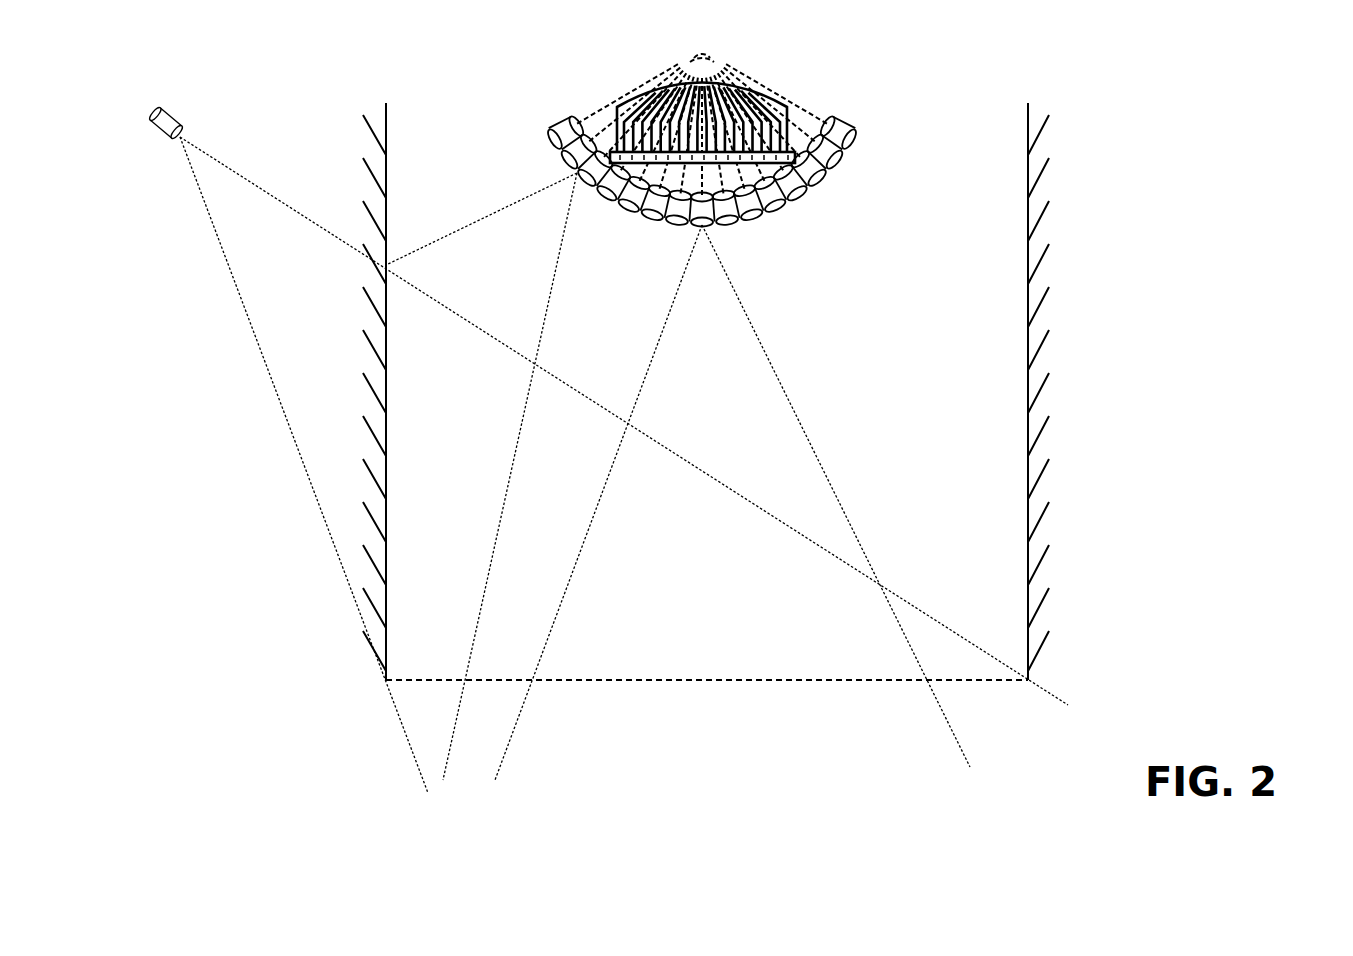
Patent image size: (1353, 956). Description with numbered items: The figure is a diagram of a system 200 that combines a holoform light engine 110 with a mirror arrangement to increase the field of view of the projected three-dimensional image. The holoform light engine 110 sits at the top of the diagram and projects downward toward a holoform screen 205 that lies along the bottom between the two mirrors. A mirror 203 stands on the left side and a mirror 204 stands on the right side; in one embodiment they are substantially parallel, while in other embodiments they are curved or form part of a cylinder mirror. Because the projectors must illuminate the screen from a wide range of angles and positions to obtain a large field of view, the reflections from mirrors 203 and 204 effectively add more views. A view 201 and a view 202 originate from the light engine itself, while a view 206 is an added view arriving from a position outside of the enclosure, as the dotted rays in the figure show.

The system 200 is at (1176, 98).
The holoform light engine 110 is at (798, 96).
The view 201 is at (581, 183).
The view 202 is at (713, 228).
The mirror 203 is at (377, 110).
The mirror 204 is at (1035, 113).
The holoform plane 205 is at (797, 699).
The view 206 is at (186, 128).